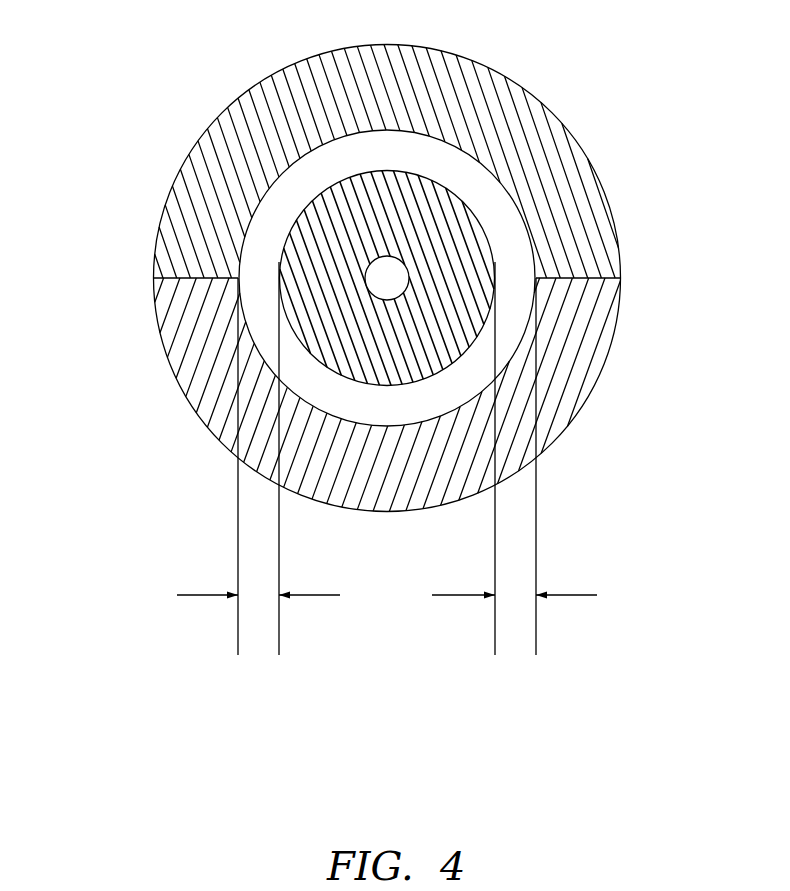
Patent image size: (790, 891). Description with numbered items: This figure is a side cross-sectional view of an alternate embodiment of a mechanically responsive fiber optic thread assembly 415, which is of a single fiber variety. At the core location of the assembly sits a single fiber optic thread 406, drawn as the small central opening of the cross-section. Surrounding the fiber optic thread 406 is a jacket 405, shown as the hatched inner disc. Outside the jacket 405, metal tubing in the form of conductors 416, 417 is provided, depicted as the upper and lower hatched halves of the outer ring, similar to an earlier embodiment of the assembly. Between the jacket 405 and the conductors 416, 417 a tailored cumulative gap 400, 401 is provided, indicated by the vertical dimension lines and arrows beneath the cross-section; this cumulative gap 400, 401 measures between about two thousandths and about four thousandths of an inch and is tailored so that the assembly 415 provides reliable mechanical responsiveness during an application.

The mechanically responsive fiber optic thread assembly 415 is at (148, 65).
The conductor 416 is at (602, 232).
The conductor 417 is at (590, 358).
The jacket 405 is at (433, 193).
The fiber optic thread 406 is at (384, 277).
The cumulative gap 400 is at (267, 649).
The cumulative gap 401 is at (515, 650).